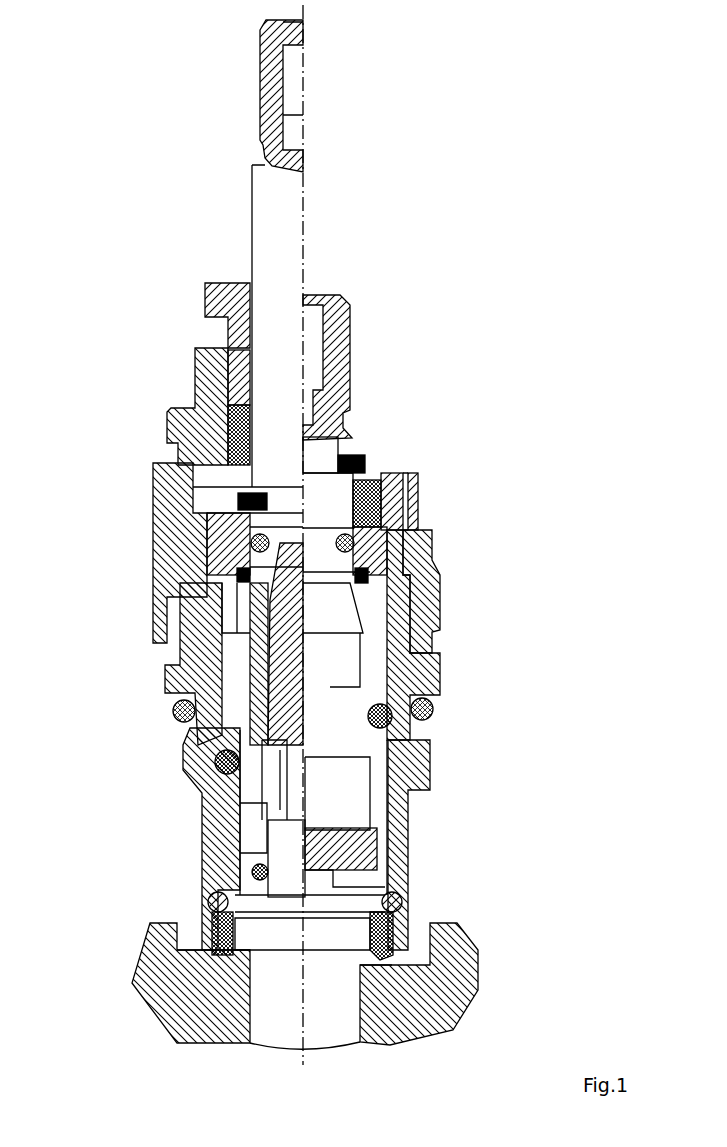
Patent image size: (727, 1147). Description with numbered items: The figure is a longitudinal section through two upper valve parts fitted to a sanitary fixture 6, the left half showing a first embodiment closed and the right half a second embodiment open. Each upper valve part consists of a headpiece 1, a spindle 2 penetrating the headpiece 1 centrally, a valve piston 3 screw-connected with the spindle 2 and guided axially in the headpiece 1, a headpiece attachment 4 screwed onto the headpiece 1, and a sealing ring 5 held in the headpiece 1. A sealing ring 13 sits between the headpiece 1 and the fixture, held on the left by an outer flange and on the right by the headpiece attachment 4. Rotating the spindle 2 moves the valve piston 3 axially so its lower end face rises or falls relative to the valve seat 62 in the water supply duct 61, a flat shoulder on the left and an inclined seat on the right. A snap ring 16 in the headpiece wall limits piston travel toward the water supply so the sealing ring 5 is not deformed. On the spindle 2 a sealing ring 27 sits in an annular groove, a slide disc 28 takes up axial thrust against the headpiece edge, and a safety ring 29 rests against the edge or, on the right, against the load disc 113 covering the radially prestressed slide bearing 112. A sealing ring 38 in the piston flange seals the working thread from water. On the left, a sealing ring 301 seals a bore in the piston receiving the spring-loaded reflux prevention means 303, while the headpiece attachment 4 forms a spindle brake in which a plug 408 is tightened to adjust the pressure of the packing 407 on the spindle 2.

The headpiece 1 is at (197, 665).
The spindle 2 is at (277, 225).
The valve piston 3 is at (233, 732).
The headpiece attachment 4 is at (168, 546).
The sealing ring 5 is at (212, 930).
The sanitary fixture 6 is at (153, 970).
The sealing ring 13 is at (175, 703).
The snap ring 16 is at (210, 898).
The sealing ring 27 is at (252, 540).
The slide disc 28 is at (237, 577).
The safety ring 29 is at (238, 496).
The sealing ring 38 is at (217, 766).
The water supply duct 61 is at (303, 1052).
The valve seat 62 is at (227, 957).
The slide bearing 112 is at (418, 472).
The load disc 113 is at (385, 472).
The sealing ring 301 is at (255, 872).
The reflux prevention means 303 is at (290, 848).
The packing 407 is at (215, 425).
The plug 408 is at (205, 300).